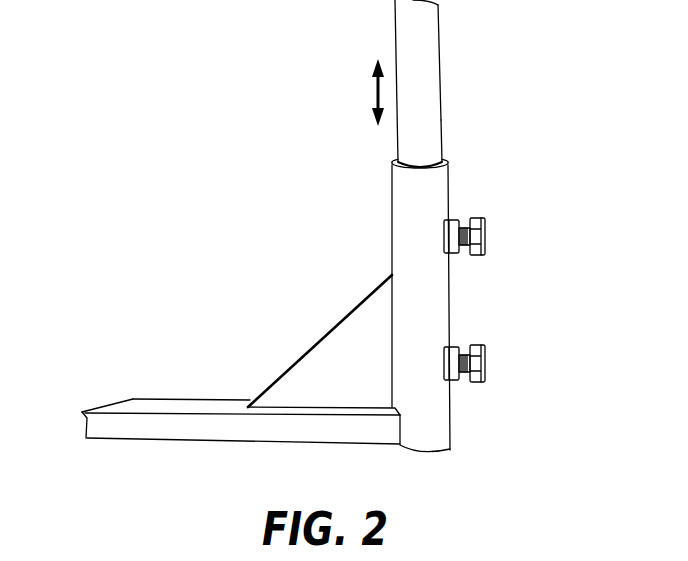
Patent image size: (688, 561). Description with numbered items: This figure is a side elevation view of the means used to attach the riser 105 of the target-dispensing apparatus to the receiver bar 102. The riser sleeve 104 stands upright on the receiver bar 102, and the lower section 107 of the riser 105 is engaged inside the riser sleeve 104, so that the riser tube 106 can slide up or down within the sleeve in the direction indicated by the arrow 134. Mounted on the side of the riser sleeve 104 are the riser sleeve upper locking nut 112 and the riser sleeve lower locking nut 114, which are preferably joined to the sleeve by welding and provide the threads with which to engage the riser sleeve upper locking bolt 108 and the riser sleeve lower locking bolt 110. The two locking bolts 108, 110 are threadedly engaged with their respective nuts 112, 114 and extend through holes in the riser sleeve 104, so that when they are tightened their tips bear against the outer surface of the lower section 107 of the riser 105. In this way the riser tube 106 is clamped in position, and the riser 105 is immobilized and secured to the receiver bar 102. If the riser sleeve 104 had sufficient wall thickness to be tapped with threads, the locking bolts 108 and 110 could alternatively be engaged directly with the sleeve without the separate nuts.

The receiver bar 102 is at (170, 403).
The riser sleeve 104 is at (405, 238).
The riser 105 is at (475, 72).
The riser tube 106 is at (442, 138).
The lower section of riser 107 is at (381, 147).
The riser sleeve upper locking bolt 108 is at (488, 235).
The riser sleeve lower locking bolt 110 is at (488, 362).
The riser sleeve upper locking nut 112 is at (452, 250).
The riser sleeve lower locking nut 114 is at (452, 378).
The arrow 134 is at (377, 90).